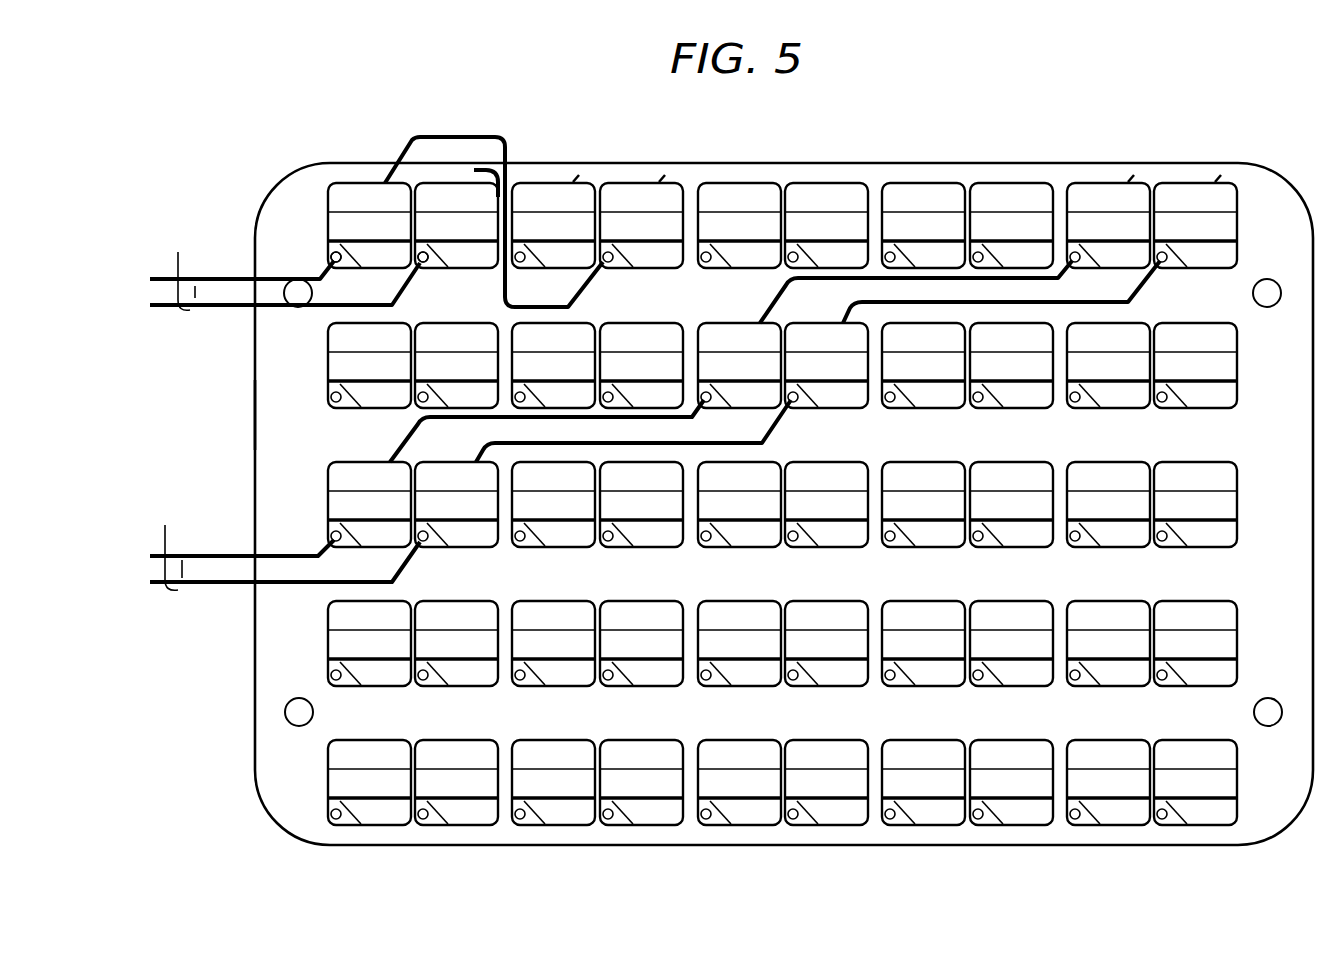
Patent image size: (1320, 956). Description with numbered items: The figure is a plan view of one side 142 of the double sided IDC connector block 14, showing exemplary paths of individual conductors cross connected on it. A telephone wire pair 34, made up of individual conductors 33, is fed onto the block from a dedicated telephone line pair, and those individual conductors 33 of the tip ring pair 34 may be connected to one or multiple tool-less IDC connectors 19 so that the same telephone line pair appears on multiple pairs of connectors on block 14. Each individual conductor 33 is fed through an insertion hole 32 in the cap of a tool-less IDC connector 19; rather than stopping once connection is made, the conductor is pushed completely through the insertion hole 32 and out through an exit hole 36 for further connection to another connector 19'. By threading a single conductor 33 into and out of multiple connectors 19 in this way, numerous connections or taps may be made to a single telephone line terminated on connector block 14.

The double sided IDC connector block 14 is at (1012, 162).
The one side of the connector block 142 is at (267, 413).
The tool-less IDC connector 19 is at (762, 464).
The another connector 19' is at (597, 185).
The insertion hole 32 is at (333, 254).
The individual conductor 33 is at (232, 278).
The telephone wire pair 34 is at (190, 278).
The exit hole 36 is at (473, 180).